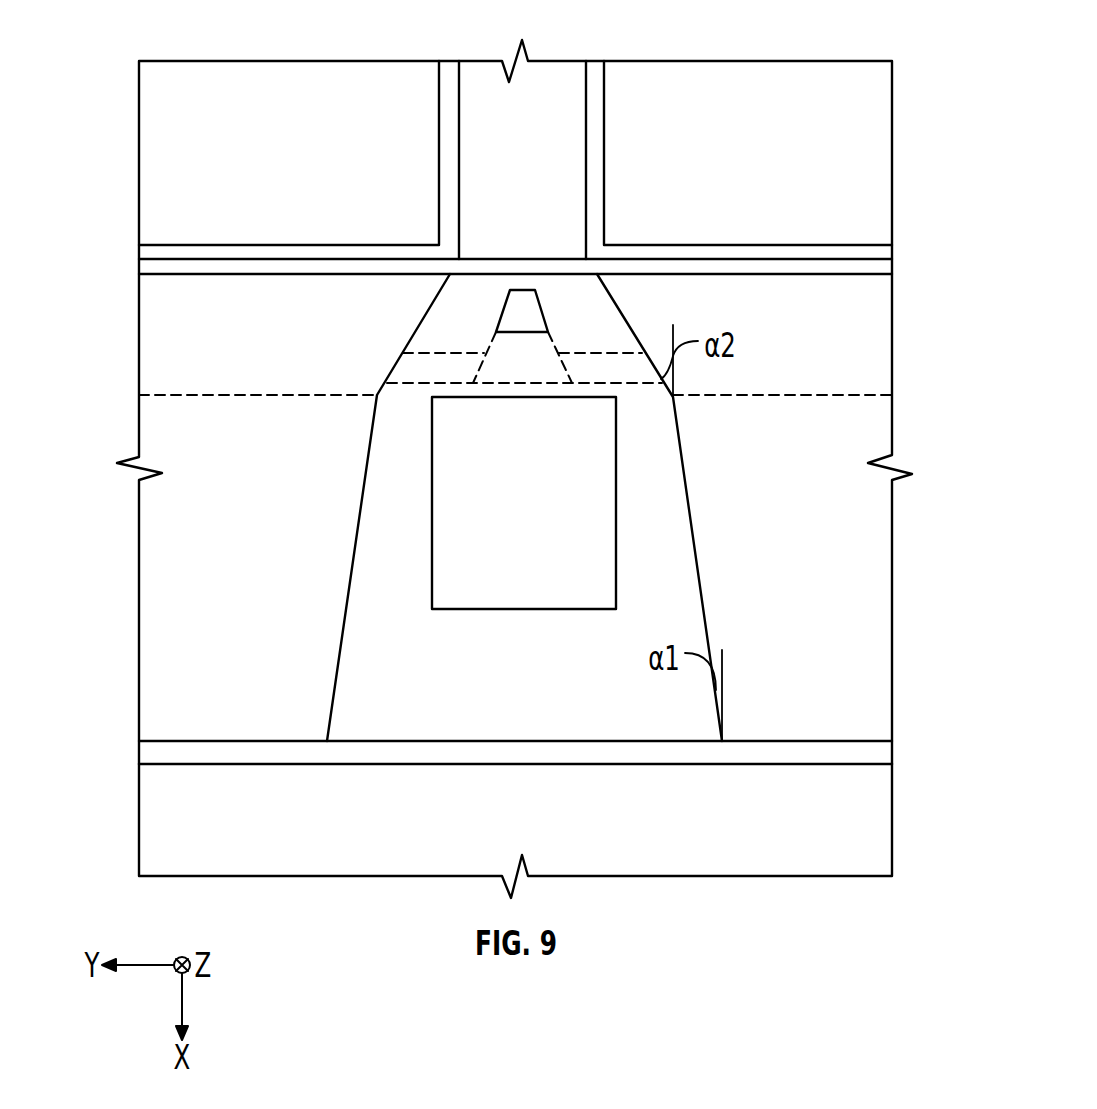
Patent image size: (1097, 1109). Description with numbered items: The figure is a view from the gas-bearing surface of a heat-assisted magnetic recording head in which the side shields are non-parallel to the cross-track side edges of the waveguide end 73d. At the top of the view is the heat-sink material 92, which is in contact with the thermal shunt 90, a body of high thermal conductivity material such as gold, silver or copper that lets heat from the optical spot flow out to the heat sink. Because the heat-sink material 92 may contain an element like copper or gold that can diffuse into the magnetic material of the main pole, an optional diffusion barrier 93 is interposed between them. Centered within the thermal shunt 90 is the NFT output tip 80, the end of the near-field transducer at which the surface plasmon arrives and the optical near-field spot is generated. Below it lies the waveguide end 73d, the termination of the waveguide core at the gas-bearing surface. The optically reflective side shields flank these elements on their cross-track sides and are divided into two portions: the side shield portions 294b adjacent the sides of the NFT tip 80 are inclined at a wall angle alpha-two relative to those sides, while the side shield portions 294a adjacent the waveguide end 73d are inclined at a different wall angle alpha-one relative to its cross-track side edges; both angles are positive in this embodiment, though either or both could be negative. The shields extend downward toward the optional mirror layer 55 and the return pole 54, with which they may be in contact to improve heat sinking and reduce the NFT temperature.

The heat-sink material 92 is at (259, 88).
The diffusion barrier 93 is at (447, 78).
The thermal shunt 90 is at (592, 323).
The NFT output tip 80 is at (525, 302).
The side shield portions 294b is at (200, 347).
The side shield portions 294a is at (202, 555).
The waveguide end 73d is at (490, 527).
The mirror layer 55 is at (872, 757).
The return pole 54 is at (872, 825).